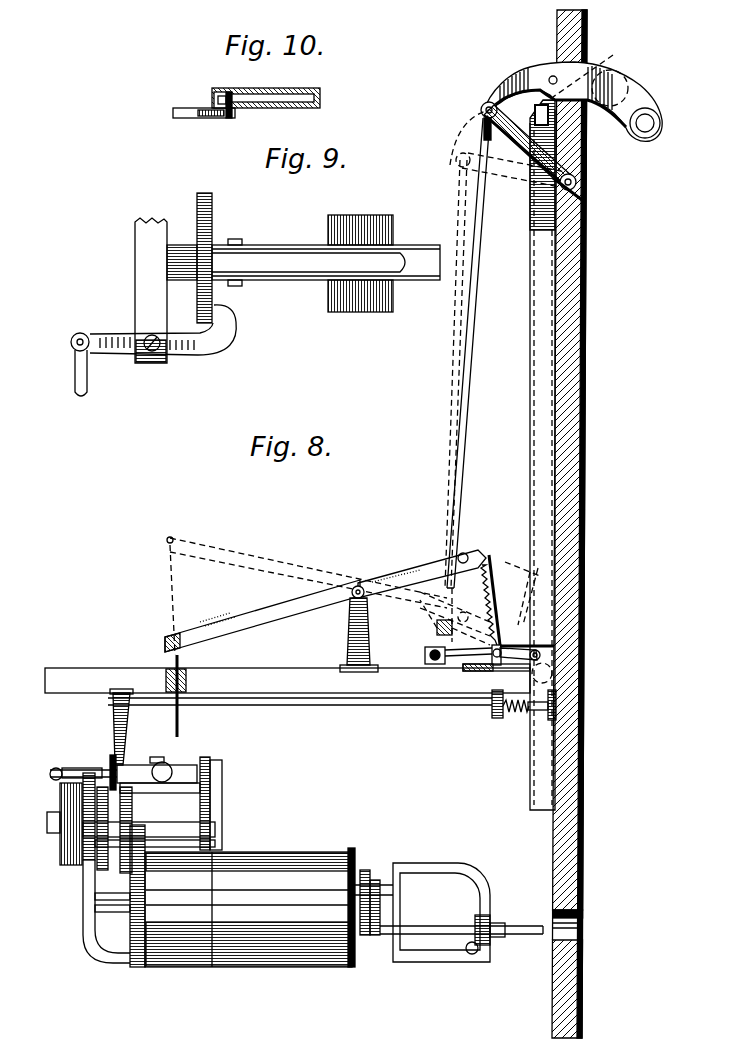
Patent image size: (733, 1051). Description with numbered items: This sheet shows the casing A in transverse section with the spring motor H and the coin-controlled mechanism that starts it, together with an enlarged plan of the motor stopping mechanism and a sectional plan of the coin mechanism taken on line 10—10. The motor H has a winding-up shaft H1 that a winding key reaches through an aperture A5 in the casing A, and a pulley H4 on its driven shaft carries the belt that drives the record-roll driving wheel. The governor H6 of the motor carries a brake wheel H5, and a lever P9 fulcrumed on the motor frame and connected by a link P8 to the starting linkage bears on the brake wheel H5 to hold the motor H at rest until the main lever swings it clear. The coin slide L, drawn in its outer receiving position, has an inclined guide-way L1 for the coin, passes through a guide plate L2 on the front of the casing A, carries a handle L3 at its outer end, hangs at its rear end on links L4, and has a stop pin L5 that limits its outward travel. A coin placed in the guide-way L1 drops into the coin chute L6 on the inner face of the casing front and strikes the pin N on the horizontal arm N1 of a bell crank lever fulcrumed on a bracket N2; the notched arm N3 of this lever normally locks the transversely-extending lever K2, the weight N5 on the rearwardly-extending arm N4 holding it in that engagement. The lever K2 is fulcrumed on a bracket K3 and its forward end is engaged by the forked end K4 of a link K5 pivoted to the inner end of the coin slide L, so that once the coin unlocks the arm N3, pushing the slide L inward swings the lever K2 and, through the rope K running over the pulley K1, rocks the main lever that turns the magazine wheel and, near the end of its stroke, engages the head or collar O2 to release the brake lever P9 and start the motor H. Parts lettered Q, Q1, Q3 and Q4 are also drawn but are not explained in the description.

In FIG. 8, the casing A is at (583, 823).
In FIG. 8, the aperture A5 is at (580, 915).
In FIG. 8, the coin slide L is at (530, 78).
In FIG. 8, the guide-way L1 is at (595, 72).
In FIG. 8, the guide plate L2 is at (587, 158).
In FIG. 8, the handle L3 is at (660, 126).
In FIG. 8, the links L4 is at (525, 148).
In FIG. 8, the stop pin L5 is at (550, 77).
In FIG. 10, the coin chute L6 is at (303, 98).
In FIG. 8, the coin chute L6 is at (548, 313).
In FIG. 8, the rope K is at (181, 727).
In FIG. 8, the pulley K1 is at (190, 683).
In FIG. 8, the transversely-extending lever K2 is at (306, 596).
In FIG. 8, the bracket K3 is at (348, 637).
In FIG. 8, the forked end K4 is at (452, 560).
In FIG. 8, the link K5 is at (463, 372).
In FIG. 8, the hanger Q is at (126, 735).
In FIG. 8, the table Q1 is at (310, 707).
In FIG. 8, the knob Q3 is at (490, 708).
In FIG. 8, the spring Q4 is at (512, 714).
In FIG. 8, the head or collar O2 is at (546, 720).
In FIG. 10, the pin N is at (224, 92).
In FIG. 8, the pin N is at (584, 651).
In FIG. 10, the horizontal arm N1 is at (196, 118).
In FIG. 8, the horizontal arm N1 is at (512, 662).
In FIG. 8, the bracket N2 is at (493, 668).
In FIG. 8, the notched arm N3 is at (510, 600).
In FIG. 8, the rearwardly-extending arm N4 is at (451, 648).
In FIG. 8, the weight N5 is at (423, 656).
In FIG. 8, the section line 10 is at (532, 652).
In FIG. 9, the motor H is at (326, 285).
In FIG. 8, the motor H is at (270, 862).
In FIG. 8, the winding-up shaft H1 is at (520, 937).
In FIG. 8, the pulley H4 is at (58, 850).
In FIG. 9, the brake wheel H5 is at (213, 213).
In FIG. 8, the brake wheel H5 is at (112, 763).
In FIG. 9, the governor H6 is at (341, 261).
In FIG. 8, the governor H6 is at (173, 750).
In FIG. 9, the link P8 is at (76, 390).
In FIG. 8, the link P8 is at (50, 774).
In FIG. 9, the lever P9 is at (188, 356).
In FIG. 8, the lever P9 is at (80, 768).